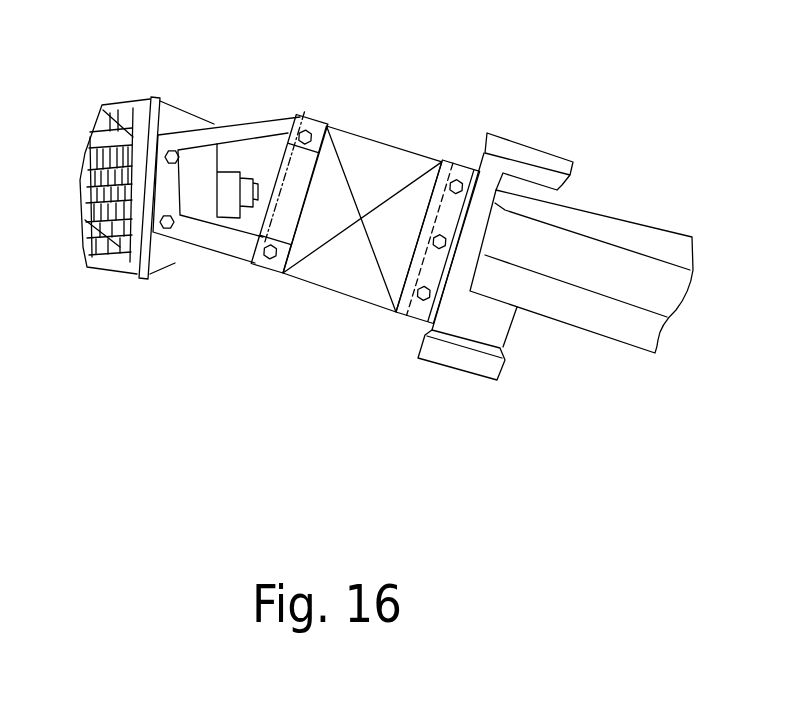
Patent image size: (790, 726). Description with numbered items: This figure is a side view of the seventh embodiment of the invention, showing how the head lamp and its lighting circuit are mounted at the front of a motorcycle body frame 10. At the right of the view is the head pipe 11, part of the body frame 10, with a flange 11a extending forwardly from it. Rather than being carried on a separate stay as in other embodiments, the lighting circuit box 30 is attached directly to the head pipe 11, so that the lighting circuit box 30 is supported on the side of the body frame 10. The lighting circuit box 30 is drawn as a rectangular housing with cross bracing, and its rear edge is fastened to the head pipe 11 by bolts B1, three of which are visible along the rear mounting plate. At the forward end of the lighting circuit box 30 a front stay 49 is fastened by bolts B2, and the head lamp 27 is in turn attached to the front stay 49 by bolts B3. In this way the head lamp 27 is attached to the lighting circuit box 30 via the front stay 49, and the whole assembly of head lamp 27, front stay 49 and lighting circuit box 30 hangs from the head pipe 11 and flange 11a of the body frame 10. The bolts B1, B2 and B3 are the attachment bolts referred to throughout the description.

The body frame 10 is at (612, 335).
The head pipe 11 is at (480, 368).
The flange 11a is at (470, 156).
The head lamp 27 is at (113, 273).
The lighting circuit box 30 is at (334, 294).
The front stay 49 is at (222, 262).
The bolt B1 is at (421, 298).
The bolt B2 is at (262, 268).
The bolt B3 is at (176, 243).